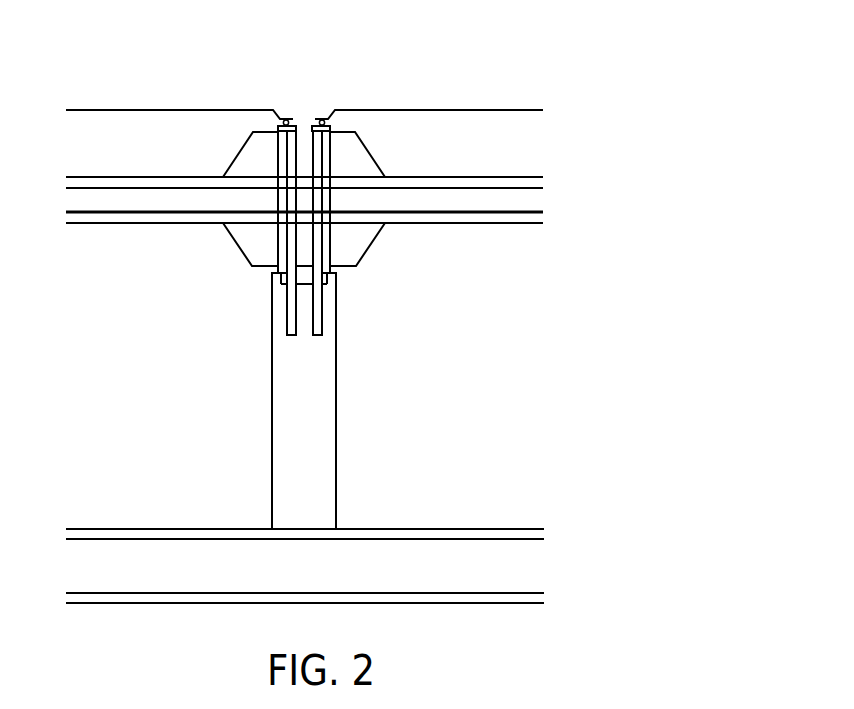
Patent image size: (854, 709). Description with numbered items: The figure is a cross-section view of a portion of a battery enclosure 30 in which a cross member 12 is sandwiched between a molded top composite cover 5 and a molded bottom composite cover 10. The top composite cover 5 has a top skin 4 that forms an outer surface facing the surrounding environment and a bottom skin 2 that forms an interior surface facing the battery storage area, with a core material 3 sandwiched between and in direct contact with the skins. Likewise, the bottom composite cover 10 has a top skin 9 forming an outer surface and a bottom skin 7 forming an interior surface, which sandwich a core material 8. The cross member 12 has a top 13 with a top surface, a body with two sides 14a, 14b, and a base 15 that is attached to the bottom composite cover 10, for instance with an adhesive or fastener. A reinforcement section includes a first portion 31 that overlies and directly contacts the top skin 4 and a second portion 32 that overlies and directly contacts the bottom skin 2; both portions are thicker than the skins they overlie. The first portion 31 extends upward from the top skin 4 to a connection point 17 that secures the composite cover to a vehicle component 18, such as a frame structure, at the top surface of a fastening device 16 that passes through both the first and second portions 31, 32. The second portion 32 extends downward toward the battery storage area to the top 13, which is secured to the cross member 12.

The bottom skin 2 is at (490, 218).
The core material 3 is at (470, 203).
The top skin 4 is at (488, 180).
The top composite cover 5 is at (331, 202).
The bottom skin 7 is at (415, 533).
The core material 8 is at (475, 545).
The top skin 9 is at (498, 595).
The bottom composite cover 10 is at (337, 565).
The cross member 12 is at (301, 401).
The top 13 is at (331, 273).
The side 14a is at (270, 410).
The side 14b is at (337, 412).
The base 15 is at (270, 528).
The fastening device 16 is at (297, 128).
The connection point 17 is at (327, 122).
The vehicle component 18 is at (447, 109).
The battery enclosure 30 is at (648, 98).
The first portion 31 is at (243, 157).
The second portion 32 is at (243, 245).